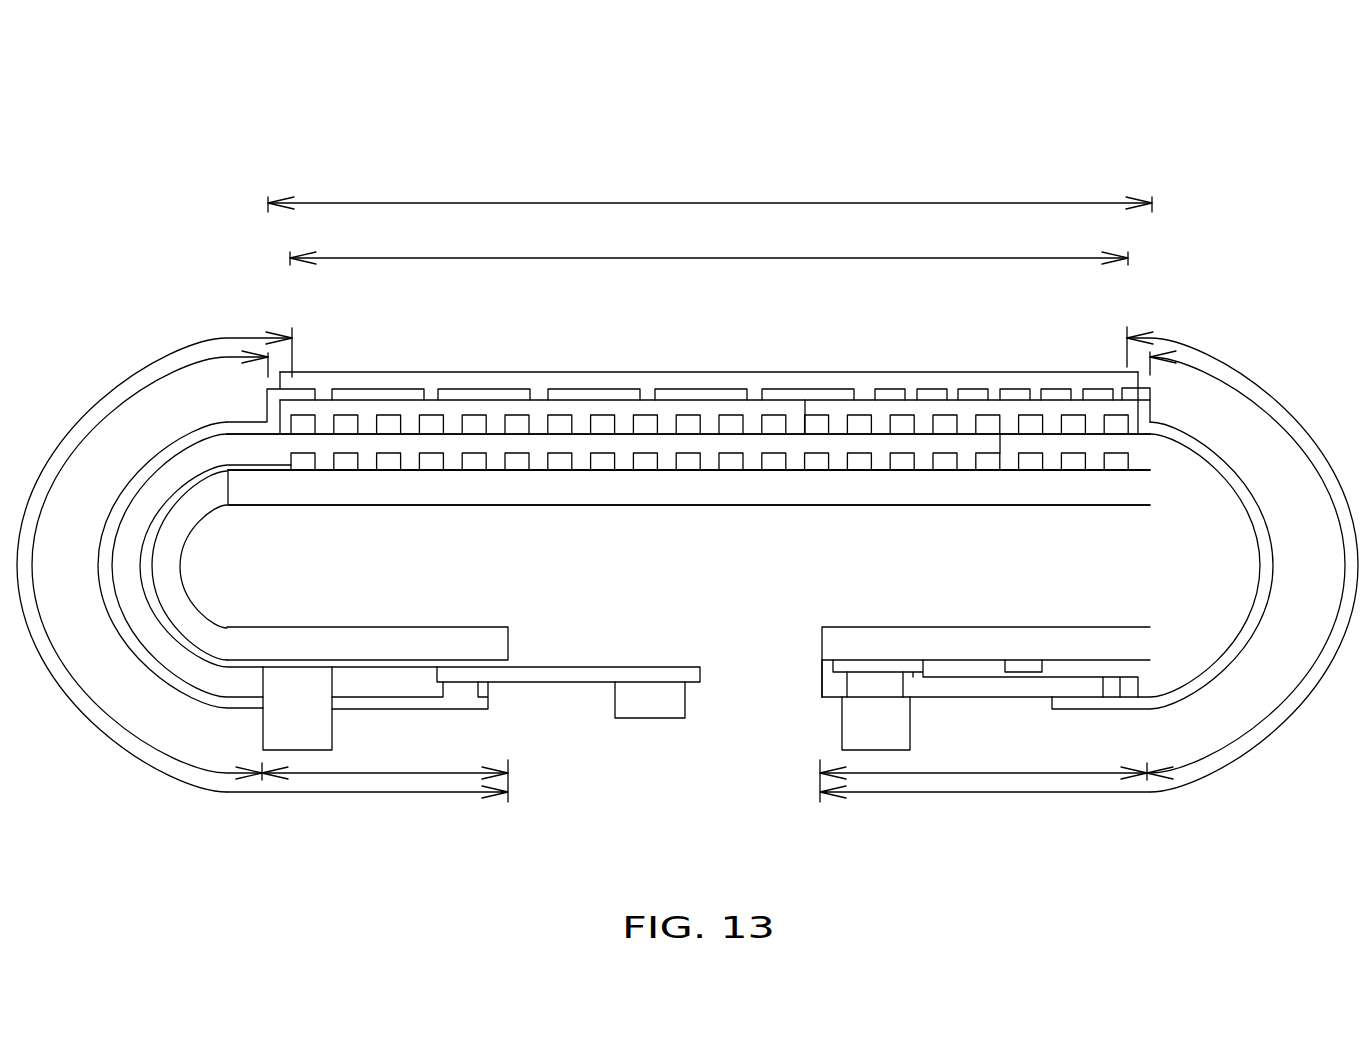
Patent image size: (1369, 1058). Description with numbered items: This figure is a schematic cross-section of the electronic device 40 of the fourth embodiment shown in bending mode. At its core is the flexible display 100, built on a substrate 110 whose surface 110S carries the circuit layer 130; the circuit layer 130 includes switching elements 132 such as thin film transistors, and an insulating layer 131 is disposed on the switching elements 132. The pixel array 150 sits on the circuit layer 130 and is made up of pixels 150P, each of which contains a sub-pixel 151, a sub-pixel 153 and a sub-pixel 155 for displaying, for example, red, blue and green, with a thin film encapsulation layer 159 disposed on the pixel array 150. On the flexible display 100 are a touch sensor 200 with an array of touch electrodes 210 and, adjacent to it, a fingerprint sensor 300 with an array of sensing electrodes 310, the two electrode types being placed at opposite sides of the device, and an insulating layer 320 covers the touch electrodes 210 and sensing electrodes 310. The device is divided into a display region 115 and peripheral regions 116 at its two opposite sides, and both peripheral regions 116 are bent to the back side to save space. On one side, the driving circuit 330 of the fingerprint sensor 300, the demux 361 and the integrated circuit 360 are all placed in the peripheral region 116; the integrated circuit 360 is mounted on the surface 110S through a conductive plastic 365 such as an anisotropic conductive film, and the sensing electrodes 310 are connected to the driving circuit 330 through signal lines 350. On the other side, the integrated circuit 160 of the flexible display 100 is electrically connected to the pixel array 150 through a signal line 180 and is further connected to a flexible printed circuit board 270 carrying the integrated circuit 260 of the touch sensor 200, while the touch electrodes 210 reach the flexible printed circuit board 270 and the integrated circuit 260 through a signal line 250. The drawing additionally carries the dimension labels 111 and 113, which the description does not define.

The electronic device 40 is at (1190, 158).
The flexible display 100 is at (1150, 400).
The substrate 110 is at (720, 485).
The surface of the substrate 110S is at (822, 663).
The first width 111 is at (704, 484).
The bending length 113 is at (687, 559).
The display region 115 is at (709, 243).
The peripheral region 116 is at (688, 808).
The circuit layer 130 is at (1142, 425).
The insulating layer 131 is at (1012, 438).
The switching element 132 is at (859, 462).
The pixel array 150 is at (303, 593).
The pixel 150P is at (267, 540).
The sub-pixel 151 is at (573, 521).
The sub-pixel 153 is at (613, 521).
The sub-pixel 155 is at (655, 521).
The thin film encapsulation layer 159 is at (795, 440).
The integrated circuit 160 is at (325, 728).
The signal line 180 is at (143, 590).
The touch sensor 200 is at (347, 354).
The touch electrodes 210 is at (385, 396).
The signal line 250 is at (108, 577).
The integrated circuit 260 is at (672, 702).
The flexible printed circuit board 270 is at (577, 669).
The fingerprint sensor 300 is at (1105, 353).
The sensing electrodes 310 is at (930, 396).
The insulating layer 320 is at (650, 388).
The driving circuit 330 is at (1093, 670).
The signal lines 350 is at (1272, 566).
The integrated circuit 360 is at (905, 738).
The demux 361 is at (965, 672).
The conductive plastic 365 is at (873, 687).